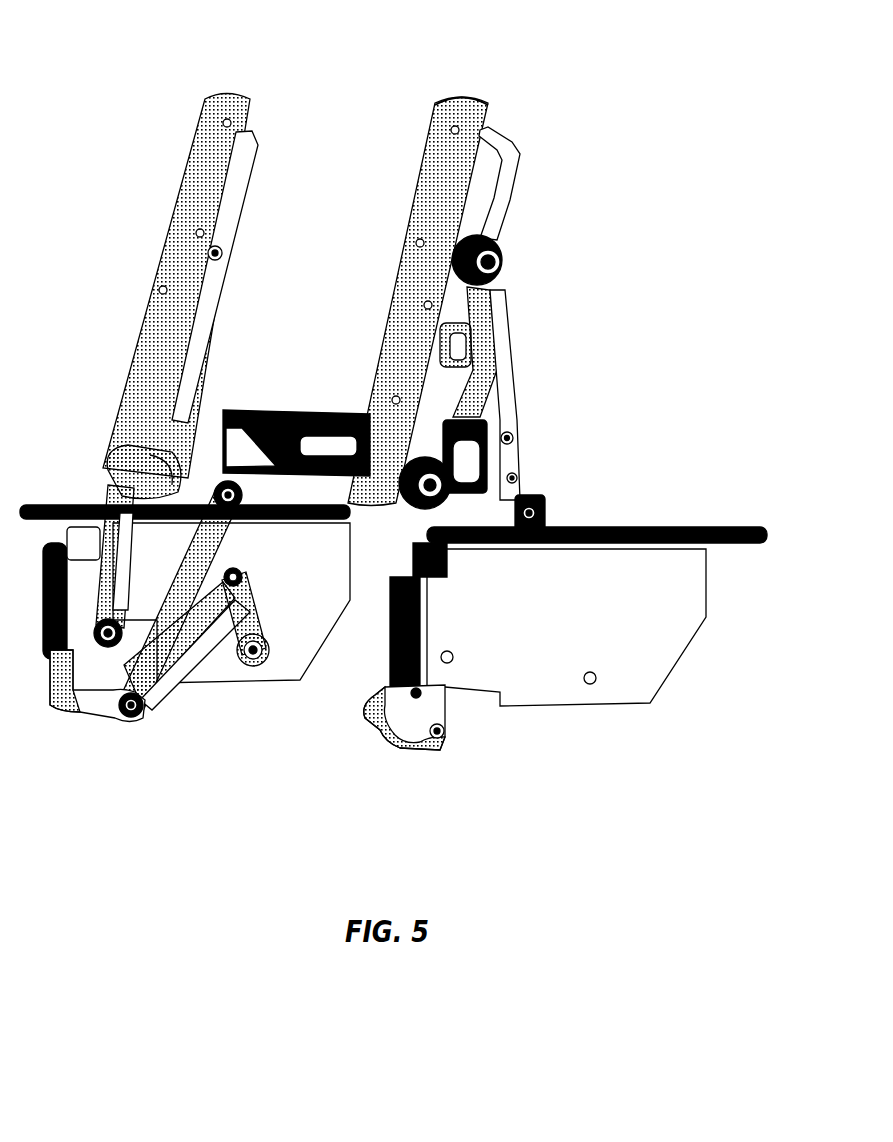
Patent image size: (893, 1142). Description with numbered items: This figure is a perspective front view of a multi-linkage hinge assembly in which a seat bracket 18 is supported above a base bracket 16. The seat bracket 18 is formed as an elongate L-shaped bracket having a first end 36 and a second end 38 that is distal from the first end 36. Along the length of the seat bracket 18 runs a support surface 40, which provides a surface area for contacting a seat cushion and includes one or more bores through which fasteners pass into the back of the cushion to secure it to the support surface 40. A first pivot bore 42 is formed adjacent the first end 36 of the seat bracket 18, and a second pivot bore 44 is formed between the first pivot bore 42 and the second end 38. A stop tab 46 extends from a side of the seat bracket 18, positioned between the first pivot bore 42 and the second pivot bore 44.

The base bracket 16 is at (680, 657).
The seat bracket 18 is at (510, 198).
The first end 36 is at (376, 503).
The second end 38 is at (466, 100).
The support surface 40 is at (440, 186).
The first pivot bore 42 is at (170, 470).
The second pivot bore 44 is at (223, 258).
The stop tab 46 is at (440, 345).